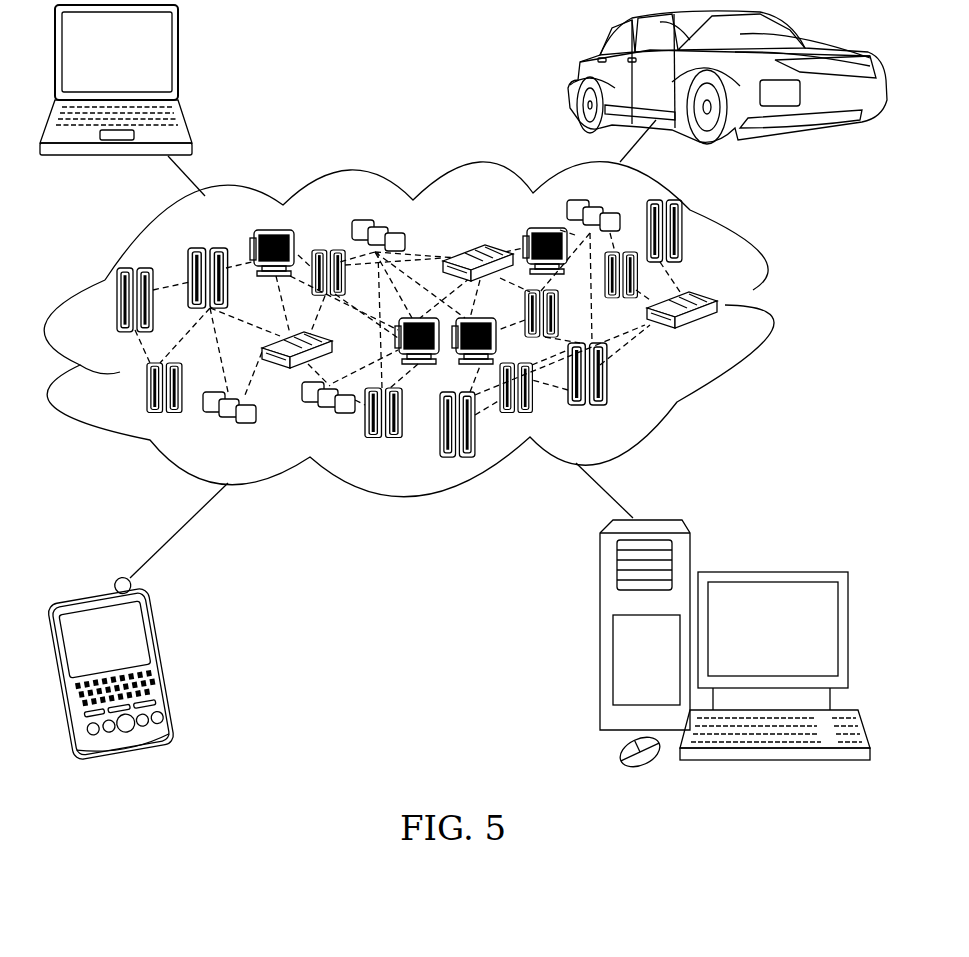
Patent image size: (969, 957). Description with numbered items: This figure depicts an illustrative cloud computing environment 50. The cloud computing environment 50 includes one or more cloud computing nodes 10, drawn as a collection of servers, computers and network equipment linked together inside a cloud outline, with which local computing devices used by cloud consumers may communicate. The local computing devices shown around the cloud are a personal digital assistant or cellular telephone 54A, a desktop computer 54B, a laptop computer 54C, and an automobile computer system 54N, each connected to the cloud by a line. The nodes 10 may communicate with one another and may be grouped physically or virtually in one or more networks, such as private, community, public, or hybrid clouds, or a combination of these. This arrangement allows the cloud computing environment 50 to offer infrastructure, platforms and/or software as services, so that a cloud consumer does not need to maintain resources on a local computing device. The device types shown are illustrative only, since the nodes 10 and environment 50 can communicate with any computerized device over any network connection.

The cloud computing node 10 is at (724, 338).
The cloud computing environment 50 is at (772, 312).
The personal digital assistant (PDA) or cellular telephone 54A is at (170, 658).
The desktop computer 54B is at (770, 570).
The laptop computer 54C is at (177, 58).
The automobile computer system 54N is at (572, 75).